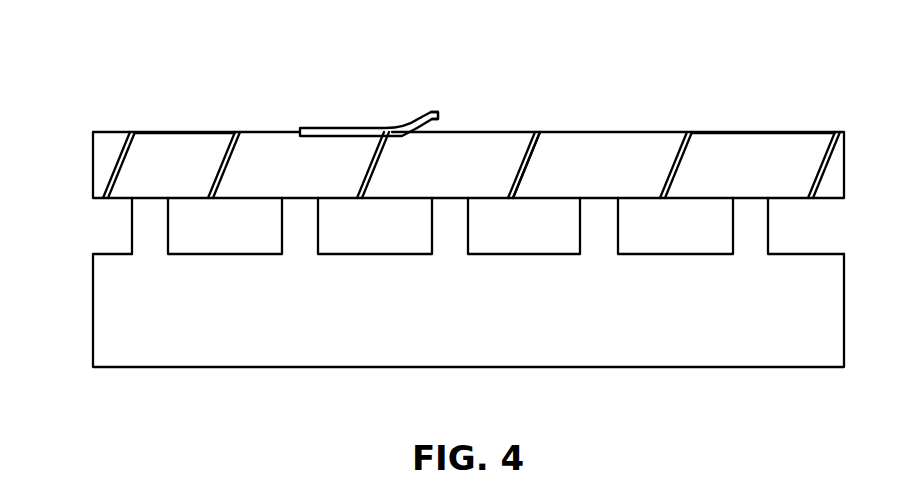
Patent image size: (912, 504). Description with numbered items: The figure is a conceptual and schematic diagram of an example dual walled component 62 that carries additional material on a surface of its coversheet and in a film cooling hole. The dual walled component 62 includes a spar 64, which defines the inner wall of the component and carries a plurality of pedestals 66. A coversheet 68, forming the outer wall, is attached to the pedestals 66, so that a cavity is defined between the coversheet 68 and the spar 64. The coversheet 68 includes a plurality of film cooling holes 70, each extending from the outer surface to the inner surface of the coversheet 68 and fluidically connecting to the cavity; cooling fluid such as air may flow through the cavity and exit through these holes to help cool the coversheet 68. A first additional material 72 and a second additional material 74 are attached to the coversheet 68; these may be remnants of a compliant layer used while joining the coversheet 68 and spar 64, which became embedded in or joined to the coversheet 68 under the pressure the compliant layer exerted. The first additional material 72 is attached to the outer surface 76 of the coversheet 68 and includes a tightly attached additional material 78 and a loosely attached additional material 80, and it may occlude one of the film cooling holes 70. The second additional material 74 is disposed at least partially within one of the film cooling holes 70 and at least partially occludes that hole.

The dual walled component 62 is at (92, 76).
The spar 64 is at (102, 312).
The pedestals 66 is at (290, 226).
The coversheet 68 is at (102, 170).
The film cooling holes 70 is at (133, 143).
The first additional material 72 is at (365, 112).
The second additional material 74 is at (537, 130).
The outer surface 76 is at (768, 132).
The tightly attached additional material 78 is at (302, 128).
The loosely attached additional material 80 is at (437, 111).